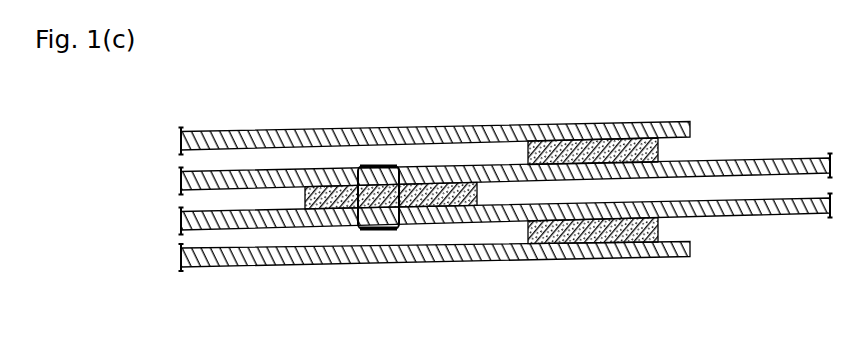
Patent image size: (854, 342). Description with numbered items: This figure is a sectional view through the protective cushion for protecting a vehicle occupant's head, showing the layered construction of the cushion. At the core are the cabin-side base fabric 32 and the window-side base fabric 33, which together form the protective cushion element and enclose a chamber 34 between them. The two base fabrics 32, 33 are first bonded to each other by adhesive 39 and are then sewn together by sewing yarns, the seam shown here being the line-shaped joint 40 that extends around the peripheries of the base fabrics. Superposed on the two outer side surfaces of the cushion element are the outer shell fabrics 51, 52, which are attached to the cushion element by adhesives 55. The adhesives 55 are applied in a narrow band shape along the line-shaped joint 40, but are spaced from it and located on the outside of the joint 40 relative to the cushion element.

The cabin-side base fabric 32 is at (180, 222).
The window-side base fabric 33 is at (176, 174).
The chamber 34 is at (461, 183).
The adhesive 39 is at (467, 164).
The line-shaped joint 40 is at (384, 164).
The outer shell fabric 51 is at (340, 272).
The outer shell fabric 52 is at (352, 127).
The adhesives 55 is at (660, 144).